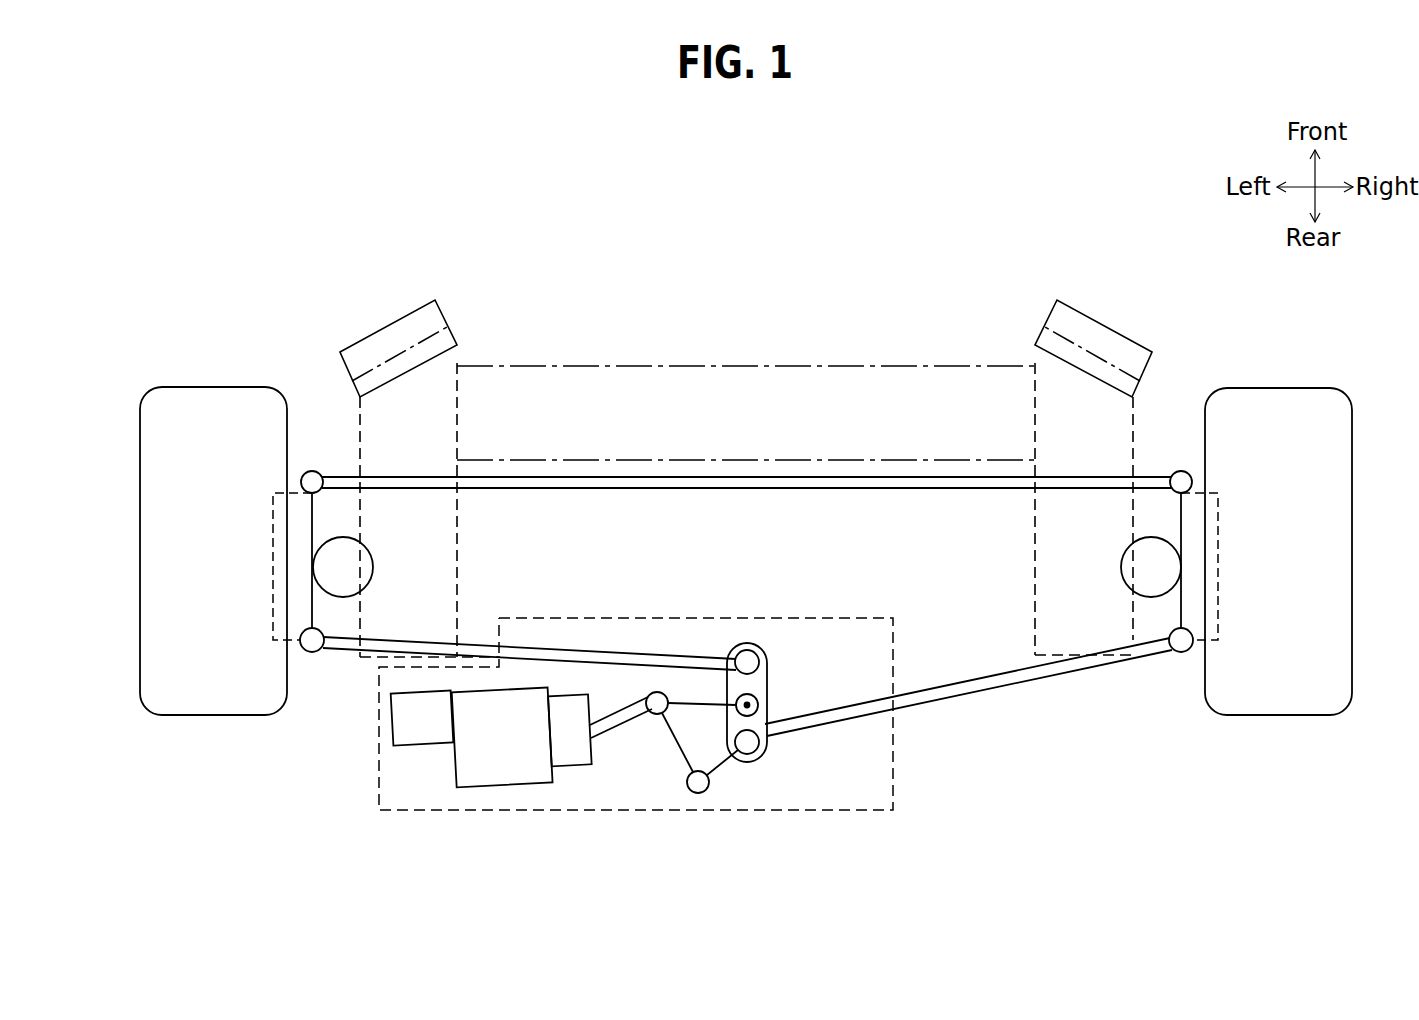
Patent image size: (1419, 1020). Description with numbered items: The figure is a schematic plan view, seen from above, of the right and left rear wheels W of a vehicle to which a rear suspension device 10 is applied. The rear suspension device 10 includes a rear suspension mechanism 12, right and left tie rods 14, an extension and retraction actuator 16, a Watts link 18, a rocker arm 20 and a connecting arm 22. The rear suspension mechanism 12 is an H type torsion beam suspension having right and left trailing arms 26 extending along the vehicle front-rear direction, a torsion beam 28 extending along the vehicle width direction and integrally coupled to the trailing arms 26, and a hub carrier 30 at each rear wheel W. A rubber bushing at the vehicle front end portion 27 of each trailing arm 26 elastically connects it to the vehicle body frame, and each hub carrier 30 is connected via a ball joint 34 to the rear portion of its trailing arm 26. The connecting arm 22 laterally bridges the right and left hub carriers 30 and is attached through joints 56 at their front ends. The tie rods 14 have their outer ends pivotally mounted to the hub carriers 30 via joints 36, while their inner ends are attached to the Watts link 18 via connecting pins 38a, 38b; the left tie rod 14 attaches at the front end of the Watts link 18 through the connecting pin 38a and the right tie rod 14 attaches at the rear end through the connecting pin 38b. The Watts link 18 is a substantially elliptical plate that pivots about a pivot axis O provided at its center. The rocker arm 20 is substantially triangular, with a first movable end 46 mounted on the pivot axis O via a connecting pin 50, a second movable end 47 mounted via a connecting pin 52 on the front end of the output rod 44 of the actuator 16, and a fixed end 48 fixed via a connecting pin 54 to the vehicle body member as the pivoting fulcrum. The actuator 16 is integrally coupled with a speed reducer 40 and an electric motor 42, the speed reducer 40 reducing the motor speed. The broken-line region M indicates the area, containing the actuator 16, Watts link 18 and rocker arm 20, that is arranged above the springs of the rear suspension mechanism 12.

The rear suspension device 10 is at (930, 270).
The rear suspension mechanism 12 is at (743, 352).
The tie rods 14 is at (476, 646).
The extension and retraction actuator 16 is at (497, 789).
The Watts link 18 is at (770, 647).
The rocker arm 20 is at (677, 745).
The connecting arm 22 is at (805, 475).
The trailing arm 26 is at (358, 405).
The vehicle front end portion 27 is at (407, 300).
The torsion beam 28 is at (630, 365).
The hub carrier 30 is at (297, 537).
The ball joint 34 is at (340, 598).
The joints 36 is at (312, 652).
The connecting pin 38a is at (747, 660).
The connecting pin 38b is at (752, 748).
The speed reducer 40 is at (572, 772).
The electric motor 42 is at (418, 747).
The output rod 44 is at (625, 742).
The first movable end 46 is at (760, 689).
The second movable end 47 is at (643, 655).
The fixed end 48 is at (709, 789).
The connecting pin 50 is at (758, 710).
The connecting pin 52 is at (657, 697).
The connecting pin 54 is at (698, 784).
The joints 56 is at (312, 470).
The rear wheel W is at (216, 387).
The region M is at (897, 780).
The pivot axis O is at (740, 702).